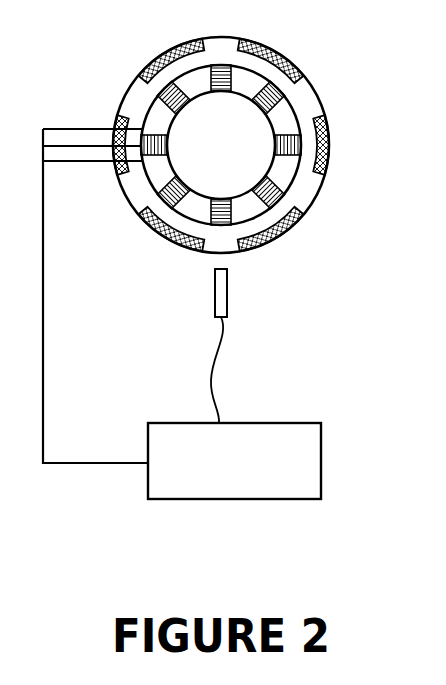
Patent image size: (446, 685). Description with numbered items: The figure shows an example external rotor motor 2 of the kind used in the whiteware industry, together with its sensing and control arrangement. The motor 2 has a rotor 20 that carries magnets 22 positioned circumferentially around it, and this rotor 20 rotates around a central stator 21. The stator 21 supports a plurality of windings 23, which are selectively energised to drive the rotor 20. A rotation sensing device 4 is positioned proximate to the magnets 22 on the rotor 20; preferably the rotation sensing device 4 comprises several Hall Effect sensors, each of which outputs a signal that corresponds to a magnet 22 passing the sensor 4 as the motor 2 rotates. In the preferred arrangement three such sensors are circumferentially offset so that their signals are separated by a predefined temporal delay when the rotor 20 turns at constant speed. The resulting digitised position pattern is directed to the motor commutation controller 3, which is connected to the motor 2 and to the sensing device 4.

The electric motor 2 is at (247, 138).
The stator 20 is at (322, 98).
The rotor 21 is at (153, 105).
The stator winding 22 is at (285, 57).
The permanent magnet 23 is at (285, 193).
The position sensor 4 is at (227, 298).
The motor controller 3 is at (322, 445).